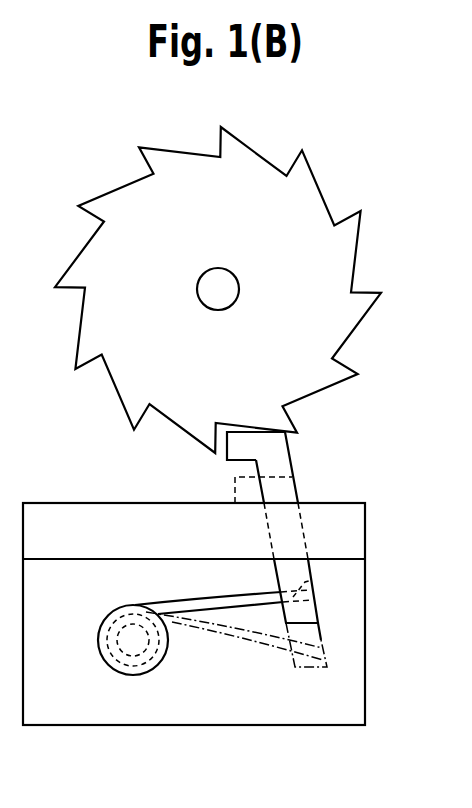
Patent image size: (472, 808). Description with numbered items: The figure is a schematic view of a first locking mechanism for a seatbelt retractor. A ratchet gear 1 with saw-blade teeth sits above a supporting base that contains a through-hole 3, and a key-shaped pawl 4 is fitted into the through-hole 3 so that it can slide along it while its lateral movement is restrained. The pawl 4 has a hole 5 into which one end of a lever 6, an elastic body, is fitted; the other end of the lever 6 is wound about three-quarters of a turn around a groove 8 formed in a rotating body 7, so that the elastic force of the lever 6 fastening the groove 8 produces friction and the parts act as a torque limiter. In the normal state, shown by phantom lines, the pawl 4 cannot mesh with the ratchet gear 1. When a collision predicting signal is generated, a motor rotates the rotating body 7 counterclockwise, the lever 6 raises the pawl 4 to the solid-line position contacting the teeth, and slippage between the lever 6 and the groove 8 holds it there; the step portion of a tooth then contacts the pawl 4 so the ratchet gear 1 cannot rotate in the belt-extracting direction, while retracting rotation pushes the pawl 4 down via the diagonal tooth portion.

The ratchet gear 1 is at (348, 259).
The through-hole 3 is at (300, 530).
The pawl 4 is at (278, 445).
The hole 5 is at (316, 573).
The lever 6 is at (193, 597).
The rotating body 7 is at (167, 663).
The groove 8 is at (135, 667).